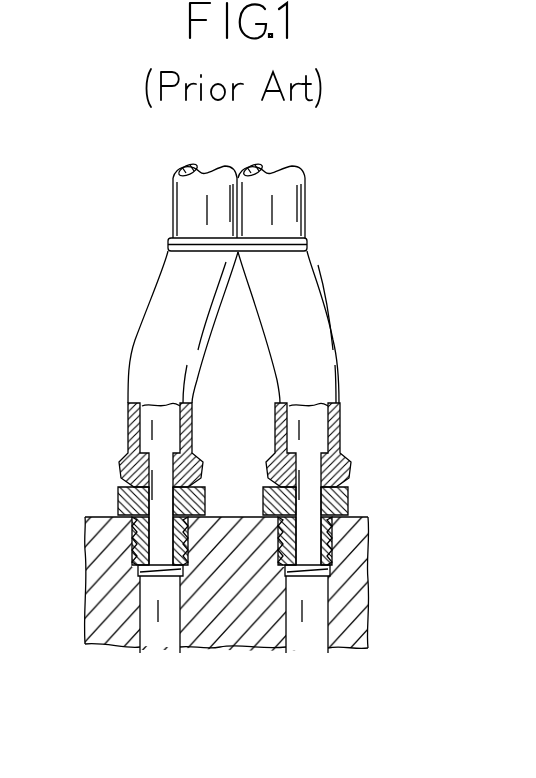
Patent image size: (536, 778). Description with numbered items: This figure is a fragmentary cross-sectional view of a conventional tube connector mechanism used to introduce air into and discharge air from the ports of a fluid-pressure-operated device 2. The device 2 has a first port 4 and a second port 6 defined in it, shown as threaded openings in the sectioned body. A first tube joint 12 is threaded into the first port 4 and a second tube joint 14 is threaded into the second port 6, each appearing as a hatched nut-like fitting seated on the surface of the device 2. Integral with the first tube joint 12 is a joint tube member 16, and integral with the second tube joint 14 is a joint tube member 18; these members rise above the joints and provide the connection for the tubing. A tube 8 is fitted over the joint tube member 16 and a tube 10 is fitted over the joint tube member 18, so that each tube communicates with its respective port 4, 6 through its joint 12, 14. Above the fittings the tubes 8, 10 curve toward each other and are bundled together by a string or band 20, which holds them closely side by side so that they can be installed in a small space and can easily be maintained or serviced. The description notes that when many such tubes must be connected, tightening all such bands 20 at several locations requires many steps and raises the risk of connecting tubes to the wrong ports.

The fluid-pressure-operated device 2 is at (105, 641).
The first port 4 is at (170, 633).
The second port 6 is at (313, 632).
The tube 8 is at (188, 296).
The tube 10 is at (298, 285).
The first tube joint 12 is at (118, 505).
The second tube joint 14 is at (348, 500).
The joint tube member 16 is at (122, 470).
The joint tube member 18 is at (343, 478).
The string or band 20 is at (278, 244).